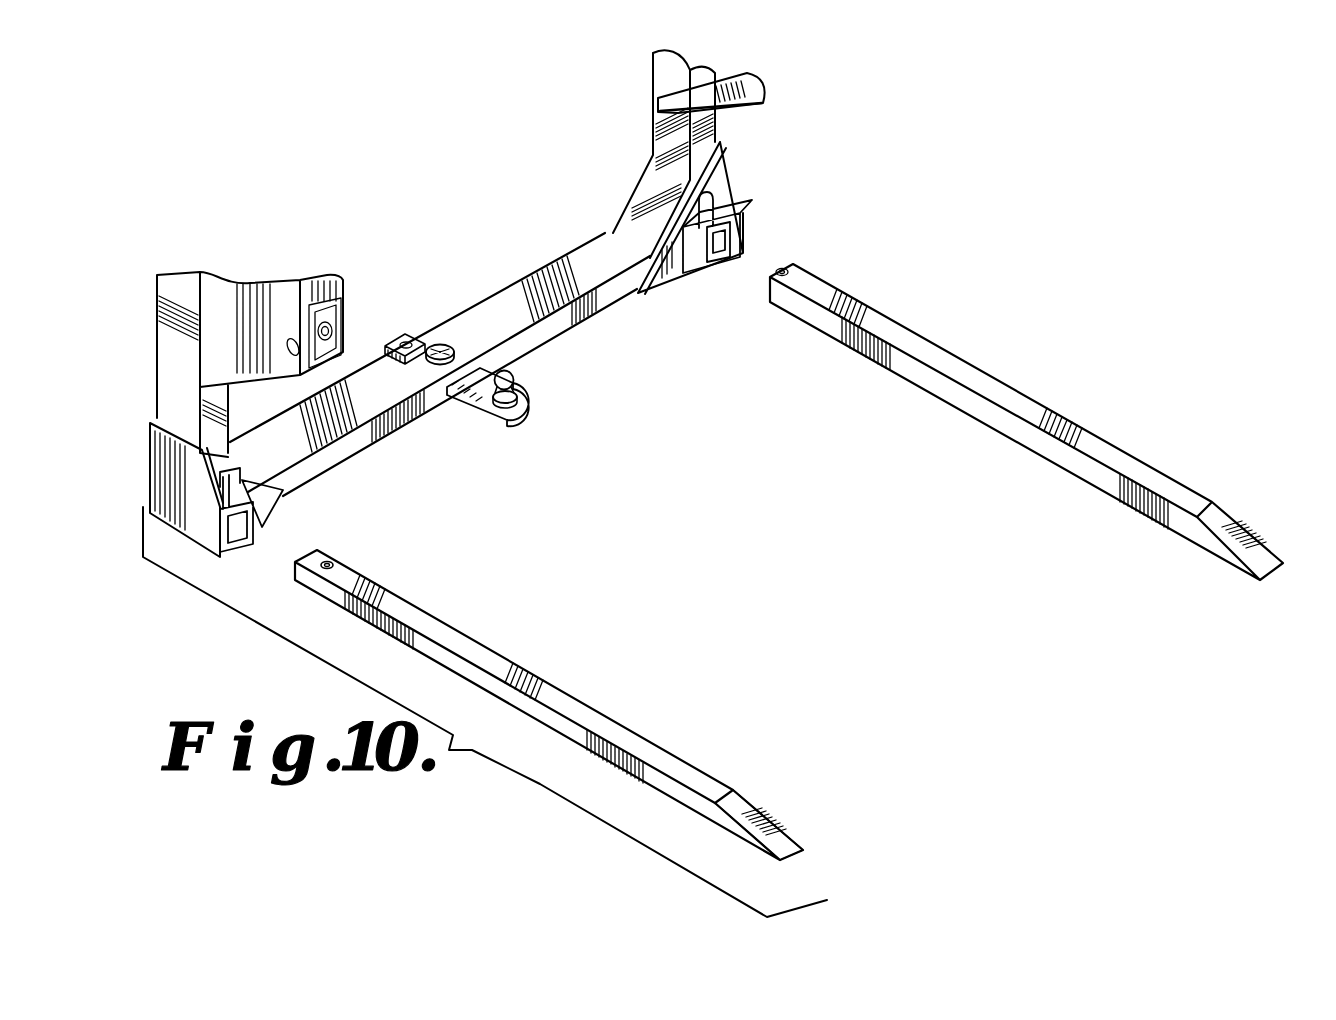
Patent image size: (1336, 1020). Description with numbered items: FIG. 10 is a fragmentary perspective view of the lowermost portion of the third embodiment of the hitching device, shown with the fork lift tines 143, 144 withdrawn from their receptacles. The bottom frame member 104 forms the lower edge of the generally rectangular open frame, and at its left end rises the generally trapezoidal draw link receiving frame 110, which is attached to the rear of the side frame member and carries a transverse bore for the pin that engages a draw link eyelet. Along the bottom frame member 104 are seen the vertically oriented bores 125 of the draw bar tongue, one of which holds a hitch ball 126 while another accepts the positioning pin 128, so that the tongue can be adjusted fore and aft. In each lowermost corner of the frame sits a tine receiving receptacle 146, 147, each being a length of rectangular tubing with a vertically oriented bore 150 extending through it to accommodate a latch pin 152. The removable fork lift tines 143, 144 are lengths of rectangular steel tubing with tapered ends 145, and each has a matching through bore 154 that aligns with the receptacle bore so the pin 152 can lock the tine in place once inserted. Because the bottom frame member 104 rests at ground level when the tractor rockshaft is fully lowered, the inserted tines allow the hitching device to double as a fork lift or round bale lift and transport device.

The bottom frame member 104 is at (578, 272).
The draw link receiving frame 110 is at (277, 303).
The vertically oriented bores 125 is at (463, 402).
The hitch ball 126 is at (527, 410).
The positioning pin 128 is at (449, 346).
The fork lift tine 143 is at (598, 703).
The fork lift tine 144 is at (985, 412).
The tapered end 145 is at (780, 836).
The tine receiving receptacle 146 is at (258, 545).
The tine receiving receptacle 147 is at (716, 272).
The vertically oriented bore 150 is at (668, 292).
The pin 152 is at (290, 481).
The through bore 154 is at (333, 567).